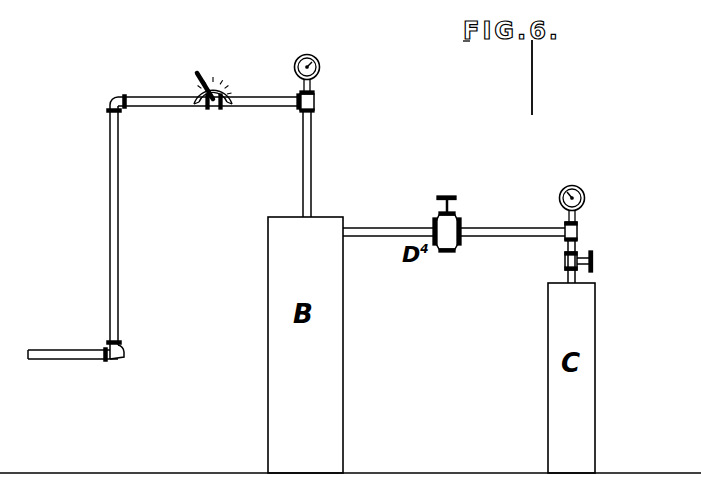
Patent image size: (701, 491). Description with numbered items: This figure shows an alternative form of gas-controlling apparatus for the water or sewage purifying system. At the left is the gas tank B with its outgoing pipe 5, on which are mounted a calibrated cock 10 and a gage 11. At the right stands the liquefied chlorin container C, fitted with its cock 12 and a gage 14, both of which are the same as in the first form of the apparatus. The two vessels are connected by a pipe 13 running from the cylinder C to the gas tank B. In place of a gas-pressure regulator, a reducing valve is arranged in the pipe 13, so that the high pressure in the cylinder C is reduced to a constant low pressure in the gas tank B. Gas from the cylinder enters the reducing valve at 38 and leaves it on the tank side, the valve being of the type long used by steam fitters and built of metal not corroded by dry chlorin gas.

The calibrated cock 10 is at (228, 93).
The gage 11 is at (323, 75).
The outgoing pipe 5 is at (320, 164).
The reducing valve inlet 38 is at (444, 228).
The pipe 13 is at (521, 237).
The gage 14 is at (584, 205).
The cock 12 is at (585, 264).